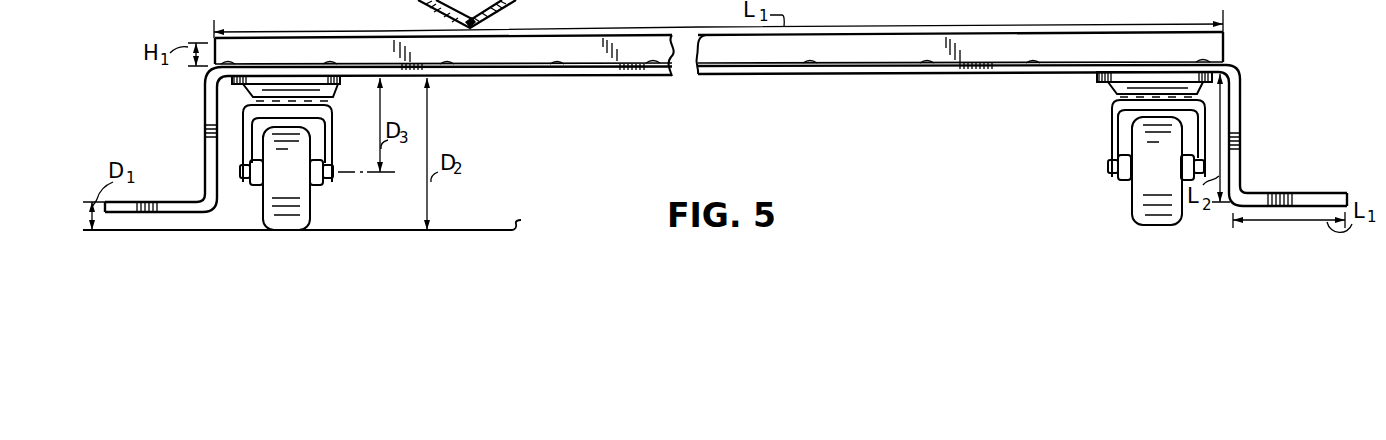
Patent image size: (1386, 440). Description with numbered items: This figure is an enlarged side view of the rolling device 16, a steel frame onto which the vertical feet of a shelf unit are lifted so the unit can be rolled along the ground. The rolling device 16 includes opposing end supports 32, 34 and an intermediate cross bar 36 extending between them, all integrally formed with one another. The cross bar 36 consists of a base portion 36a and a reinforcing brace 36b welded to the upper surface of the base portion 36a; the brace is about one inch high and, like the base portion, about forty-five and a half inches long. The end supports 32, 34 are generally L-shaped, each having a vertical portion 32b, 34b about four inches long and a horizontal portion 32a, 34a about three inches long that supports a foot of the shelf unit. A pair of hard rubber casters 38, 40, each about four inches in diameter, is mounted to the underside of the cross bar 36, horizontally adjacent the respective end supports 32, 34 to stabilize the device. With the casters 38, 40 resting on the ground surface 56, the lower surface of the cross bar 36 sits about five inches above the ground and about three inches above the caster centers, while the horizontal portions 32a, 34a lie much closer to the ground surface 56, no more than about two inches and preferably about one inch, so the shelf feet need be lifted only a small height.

The rolling device 16 is at (562, 113).
The end support 32 is at (166, 139).
The horizontal portion 32a is at (181, 205).
The vertical portion 32b is at (207, 160).
The end support 34 is at (1282, 135).
The horizontal portion 34a is at (1307, 192).
The vertical portion 34b is at (1236, 108).
The cross bar 36 is at (724, 88).
The base portion 36a is at (660, 73).
The reinforcing brace 36b is at (905, 56).
The caster 38 is at (312, 207).
The caster 40 is at (1133, 194).
The ground surface 56 is at (451, 229).